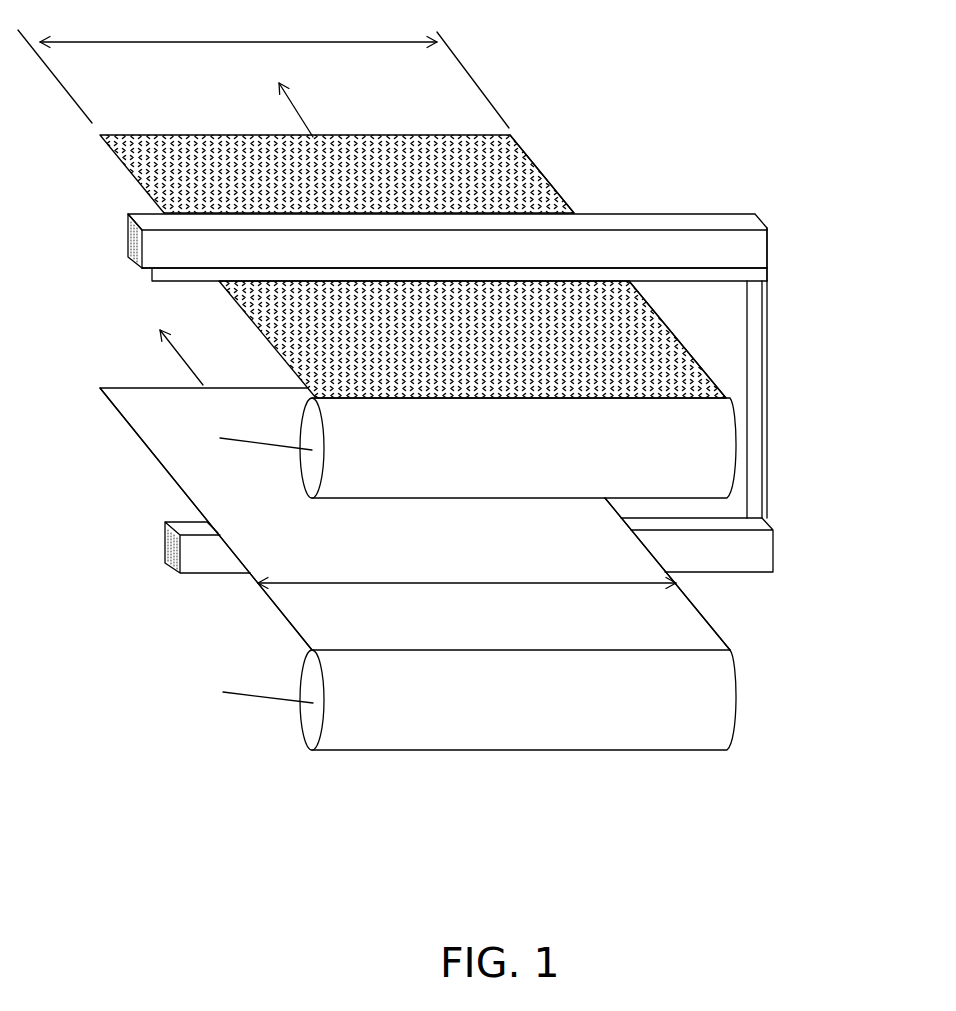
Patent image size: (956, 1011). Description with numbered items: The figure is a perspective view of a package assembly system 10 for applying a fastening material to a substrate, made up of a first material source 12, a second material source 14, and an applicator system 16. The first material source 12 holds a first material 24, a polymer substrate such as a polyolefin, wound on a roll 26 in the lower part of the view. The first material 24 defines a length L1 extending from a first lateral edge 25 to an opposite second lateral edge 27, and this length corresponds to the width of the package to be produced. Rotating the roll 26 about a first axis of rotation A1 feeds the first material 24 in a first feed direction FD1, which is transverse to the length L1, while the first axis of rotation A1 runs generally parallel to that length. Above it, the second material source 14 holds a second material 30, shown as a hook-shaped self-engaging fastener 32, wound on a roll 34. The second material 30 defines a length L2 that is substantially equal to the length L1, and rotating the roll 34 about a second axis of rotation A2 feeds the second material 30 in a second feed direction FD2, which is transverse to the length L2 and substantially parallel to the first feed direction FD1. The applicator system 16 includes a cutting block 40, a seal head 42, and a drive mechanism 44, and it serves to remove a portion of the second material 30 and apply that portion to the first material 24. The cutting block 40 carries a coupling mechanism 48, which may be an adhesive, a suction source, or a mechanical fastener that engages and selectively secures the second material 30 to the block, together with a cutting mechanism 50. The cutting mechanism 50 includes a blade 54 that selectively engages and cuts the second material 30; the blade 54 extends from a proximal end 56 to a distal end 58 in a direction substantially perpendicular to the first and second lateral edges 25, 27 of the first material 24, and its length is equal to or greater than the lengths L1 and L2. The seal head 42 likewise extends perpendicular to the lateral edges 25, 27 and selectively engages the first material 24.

The package assembly system 10 is at (687, 93).
The first material source 12 is at (754, 666).
The second material source 14 is at (271, 478).
The applicator system 16 is at (839, 196).
The first material 24 is at (182, 405).
The first lateral edge 25 is at (113, 405).
The roll 26 is at (738, 713).
The second lateral edge 27 is at (715, 627).
The second material 30 is at (218, 145).
The self-engaging fastener 32 is at (500, 148).
The roll 34 is at (373, 500).
The cutting block 40 is at (730, 200).
The seal head 42 is at (155, 589).
The drive mechanism 44 is at (782, 393).
The coupling mechanism 48 is at (128, 242).
The cutting mechanism 50 is at (669, 290).
The blade 54 is at (358, 273).
The proximal end 56 is at (152, 276).
The distal end 58 is at (767, 275).
The first axis of rotation A1 is at (252, 691).
The second axis of rotation A2 is at (251, 437).
The length L1 is at (467, 570).
The length L2 is at (238, 33).
The first feed direction FD1 is at (193, 370).
The second feed direction FD2 is at (297, 110).